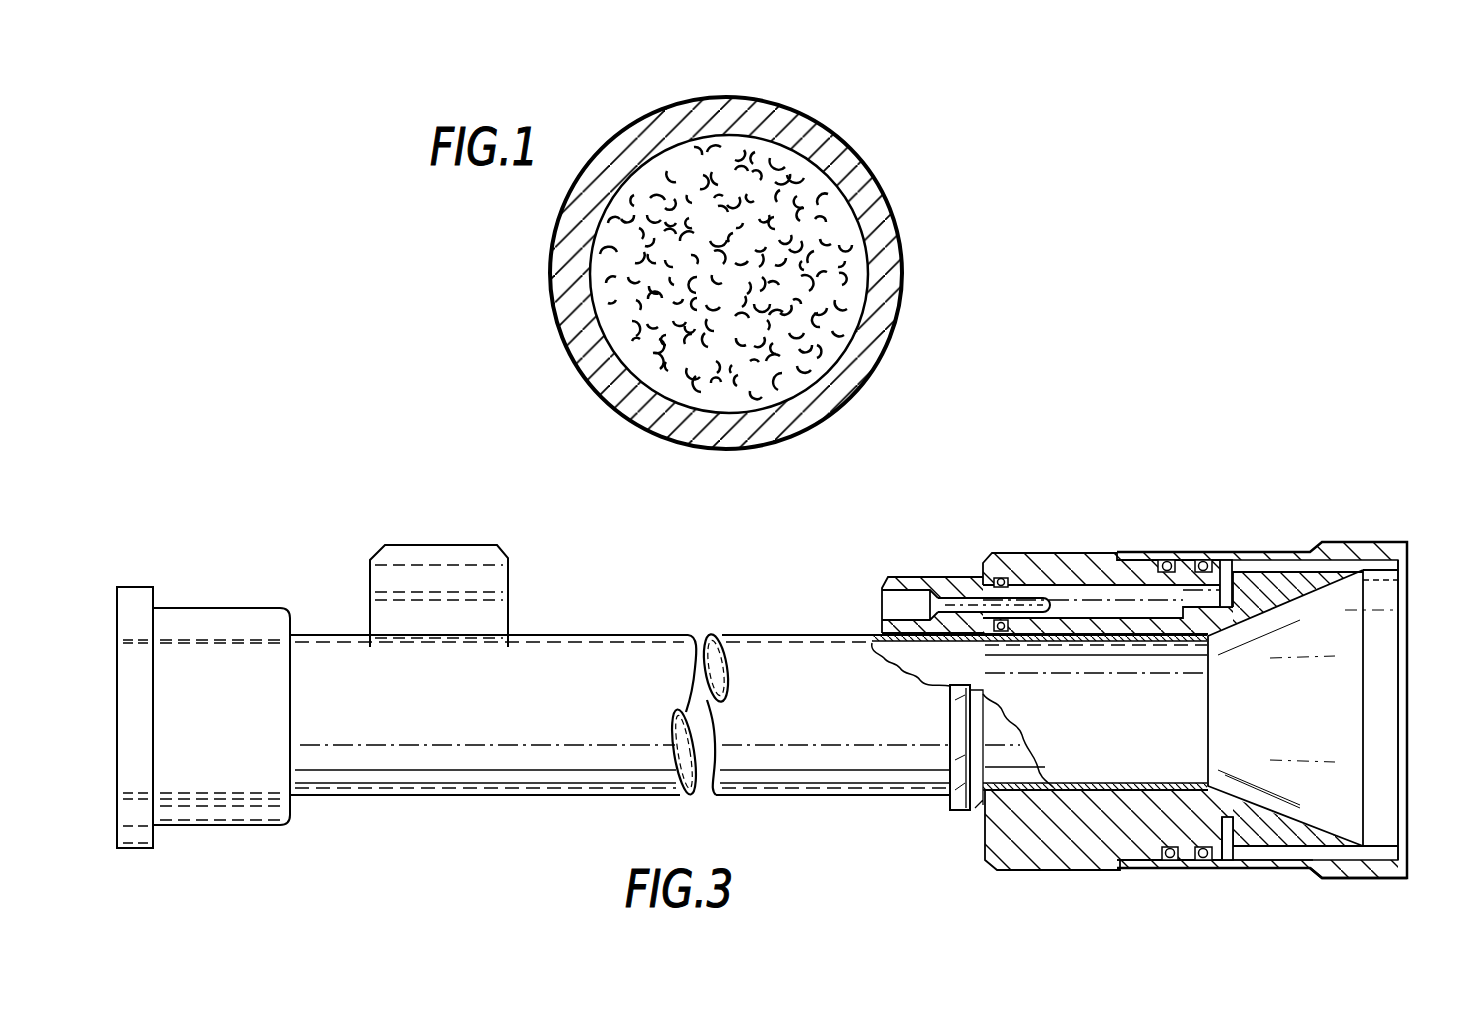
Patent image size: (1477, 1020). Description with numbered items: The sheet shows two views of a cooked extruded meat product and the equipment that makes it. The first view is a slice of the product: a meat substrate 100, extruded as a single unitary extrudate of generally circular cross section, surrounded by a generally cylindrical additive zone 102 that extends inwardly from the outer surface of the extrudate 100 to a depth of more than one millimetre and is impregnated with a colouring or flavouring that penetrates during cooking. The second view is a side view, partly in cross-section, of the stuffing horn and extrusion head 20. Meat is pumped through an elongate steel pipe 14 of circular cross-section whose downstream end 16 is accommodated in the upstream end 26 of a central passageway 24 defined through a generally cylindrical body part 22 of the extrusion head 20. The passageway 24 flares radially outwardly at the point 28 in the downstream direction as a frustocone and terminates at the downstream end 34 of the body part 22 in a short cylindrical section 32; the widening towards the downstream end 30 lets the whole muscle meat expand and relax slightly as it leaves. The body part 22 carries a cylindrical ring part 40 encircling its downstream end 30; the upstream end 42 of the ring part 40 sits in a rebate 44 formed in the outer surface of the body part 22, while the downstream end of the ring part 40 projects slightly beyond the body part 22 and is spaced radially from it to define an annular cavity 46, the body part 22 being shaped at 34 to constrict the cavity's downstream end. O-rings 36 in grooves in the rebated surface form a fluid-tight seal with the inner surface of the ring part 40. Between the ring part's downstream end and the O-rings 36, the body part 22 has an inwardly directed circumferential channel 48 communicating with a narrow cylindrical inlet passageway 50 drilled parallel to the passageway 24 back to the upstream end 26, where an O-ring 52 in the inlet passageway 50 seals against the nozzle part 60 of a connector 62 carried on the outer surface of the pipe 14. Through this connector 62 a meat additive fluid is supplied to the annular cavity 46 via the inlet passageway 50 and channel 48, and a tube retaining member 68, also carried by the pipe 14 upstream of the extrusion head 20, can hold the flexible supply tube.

In FIG. 1, the meat substrate 100 is at (737, 272).
In FIG. 1, the additive zone 102 is at (881, 197).
In FIG. 3, the elongate steel pipe 14 is at (788, 720).
In FIG. 3, the downstream end of the pipe 16 is at (1210, 700).
In FIG. 3, the extrusion head 20 is at (1030, 852).
In FIG. 3, the body part 22 is at (1080, 553).
In FIG. 3, the central passageway 24 is at (1100, 790).
In FIG. 3, the upstream end of the passageway 26 is at (987, 815).
In FIG. 3, the flared point of the passageway 28 is at (1272, 802).
In FIG. 3, the downstream end of the body part 30 is at (1405, 641).
In FIG. 3, the short cylindrical section 32 is at (1385, 690).
In FIG. 3, the downstream end of the body part 34 is at (1380, 876).
In FIG. 3, the O-rings 36 is at (1204, 860).
In FIG. 3, the ring part 40 is at (1360, 542).
In FIG. 3, the upstream end of the ring part 42 is at (1163, 556).
In FIG. 3, the rebate 44 is at (1140, 560).
In FIG. 3, the annular cavity 46 is at (1270, 860).
In FIG. 3, the circumferential channel 48 is at (1228, 592).
In FIG. 3, the inlet passageway 50 is at (1107, 608).
In FIG. 3, the O-ring 52 is at (1001, 578).
In FIG. 3, the nozzle part 60 is at (1028, 600).
In FIG. 3, the connector 62 is at (923, 577).
In FIG. 3, the tube retaining member 68 is at (500, 577).